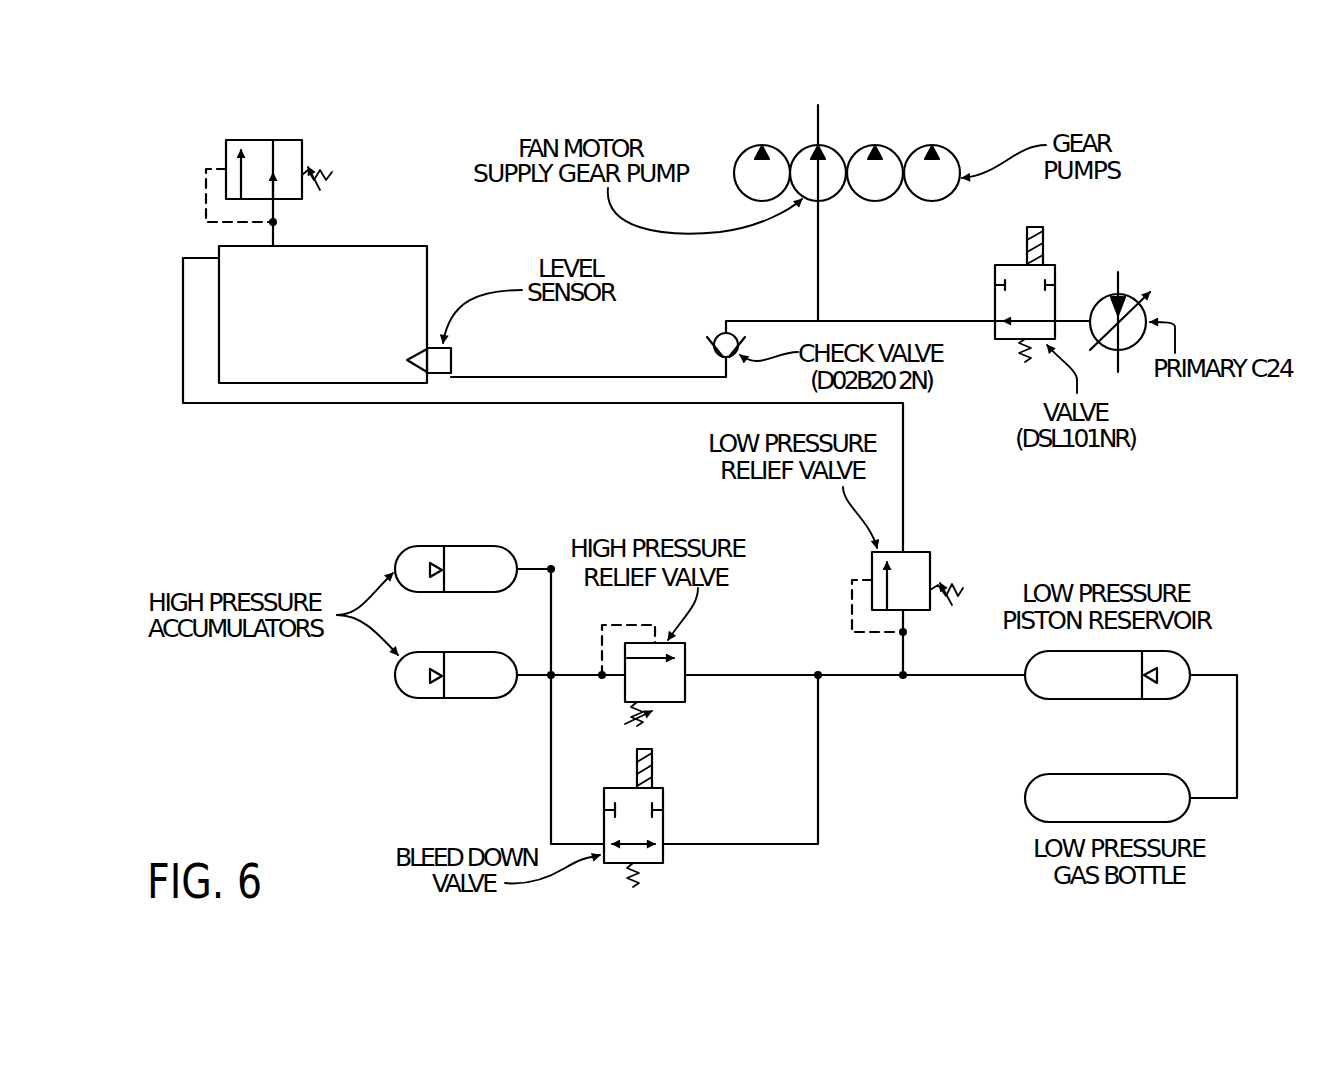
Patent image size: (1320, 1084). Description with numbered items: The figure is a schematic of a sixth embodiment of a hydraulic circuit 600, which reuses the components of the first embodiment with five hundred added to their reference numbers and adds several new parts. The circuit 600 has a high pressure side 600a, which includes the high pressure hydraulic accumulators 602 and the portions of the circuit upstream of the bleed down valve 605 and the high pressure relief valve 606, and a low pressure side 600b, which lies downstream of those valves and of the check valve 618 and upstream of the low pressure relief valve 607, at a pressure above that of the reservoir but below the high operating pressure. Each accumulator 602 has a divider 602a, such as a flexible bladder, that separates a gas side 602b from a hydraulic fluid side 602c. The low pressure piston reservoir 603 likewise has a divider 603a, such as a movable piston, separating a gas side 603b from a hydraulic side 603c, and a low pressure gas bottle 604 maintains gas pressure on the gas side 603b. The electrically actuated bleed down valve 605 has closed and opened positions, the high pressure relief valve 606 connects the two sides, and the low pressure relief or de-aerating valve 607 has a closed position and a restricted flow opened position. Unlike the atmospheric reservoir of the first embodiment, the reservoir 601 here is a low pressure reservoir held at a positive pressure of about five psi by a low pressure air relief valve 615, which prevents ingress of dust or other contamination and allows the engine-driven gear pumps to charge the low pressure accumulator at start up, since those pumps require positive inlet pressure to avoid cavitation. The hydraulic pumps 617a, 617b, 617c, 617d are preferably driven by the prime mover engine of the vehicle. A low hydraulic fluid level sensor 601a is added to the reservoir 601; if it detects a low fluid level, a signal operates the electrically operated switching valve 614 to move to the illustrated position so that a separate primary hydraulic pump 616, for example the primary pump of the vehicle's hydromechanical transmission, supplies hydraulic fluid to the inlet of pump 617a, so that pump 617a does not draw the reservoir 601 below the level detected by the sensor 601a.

The hydraulic circuit 600 is at (1217, 165).
The high pressure side 600a is at (410, 753).
The low pressure side 600b is at (915, 872).
The hydraulic fluid reservoir 601 is at (424, 270).
The low hydraulic fluid level sensor 601a is at (452, 367).
The high pressure hydraulic accumulator 602 is at (420, 543).
The divider 602a is at (445, 545).
The gas side 602b is at (403, 562).
The hydraulic fluid side 602c is at (493, 585).
The low pressure piston reservoir 603 is at (1190, 660).
The divider 603a is at (1140, 700).
The gas side 603b is at (1183, 685).
The hydraulic side 603c is at (1030, 685).
The low pressure gas bottle 604 is at (1187, 815).
The bleed down valve 605 is at (665, 800).
The high pressure relief valve 606 is at (687, 690).
The low pressure relief valve 607 is at (920, 612).
The switching valve 614 is at (995, 303).
The low pressure air relief valve 615 is at (226, 155).
The primary hydraulic pump 616 is at (1112, 296).
The hydraulic pump 617a is at (830, 145).
The hydraulic pump 617b is at (750, 145).
The hydraulic pump 617c is at (870, 202).
The hydraulic pump 617d is at (943, 145).
The check valve 618 is at (715, 349).